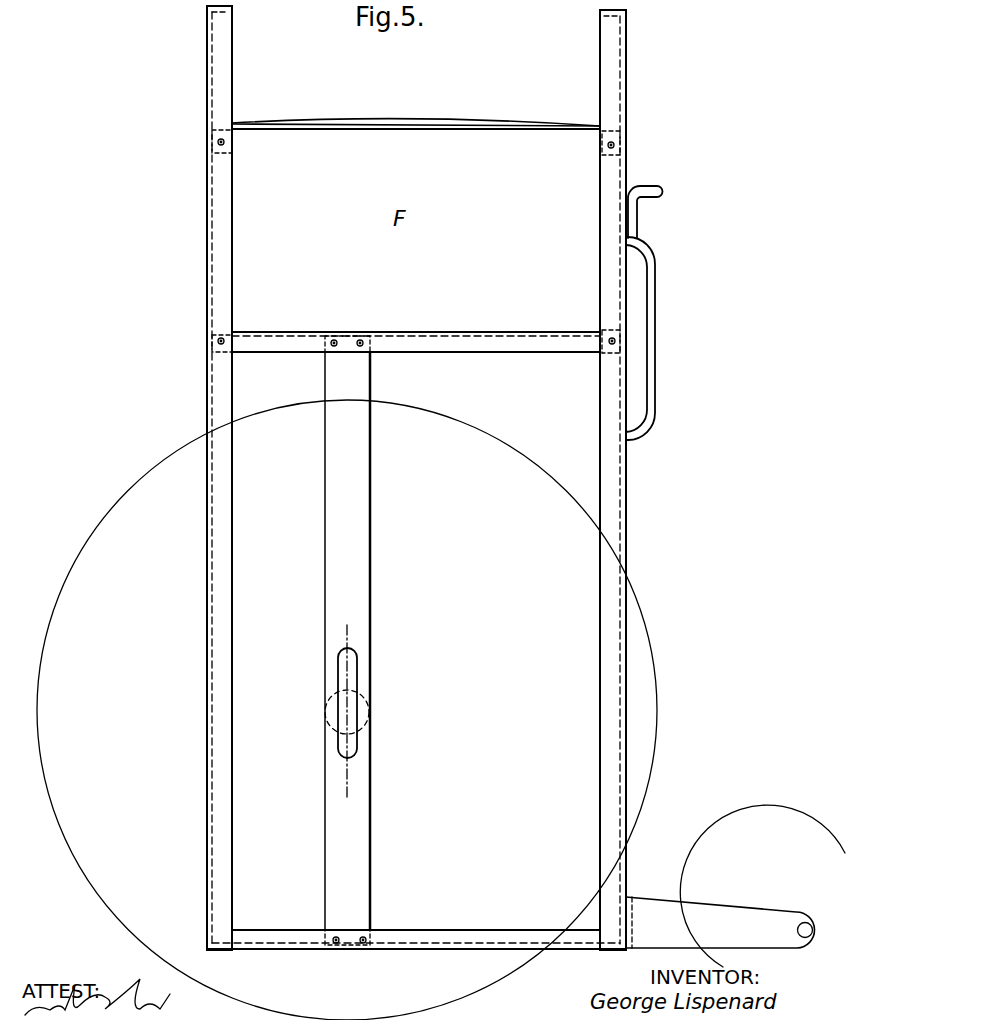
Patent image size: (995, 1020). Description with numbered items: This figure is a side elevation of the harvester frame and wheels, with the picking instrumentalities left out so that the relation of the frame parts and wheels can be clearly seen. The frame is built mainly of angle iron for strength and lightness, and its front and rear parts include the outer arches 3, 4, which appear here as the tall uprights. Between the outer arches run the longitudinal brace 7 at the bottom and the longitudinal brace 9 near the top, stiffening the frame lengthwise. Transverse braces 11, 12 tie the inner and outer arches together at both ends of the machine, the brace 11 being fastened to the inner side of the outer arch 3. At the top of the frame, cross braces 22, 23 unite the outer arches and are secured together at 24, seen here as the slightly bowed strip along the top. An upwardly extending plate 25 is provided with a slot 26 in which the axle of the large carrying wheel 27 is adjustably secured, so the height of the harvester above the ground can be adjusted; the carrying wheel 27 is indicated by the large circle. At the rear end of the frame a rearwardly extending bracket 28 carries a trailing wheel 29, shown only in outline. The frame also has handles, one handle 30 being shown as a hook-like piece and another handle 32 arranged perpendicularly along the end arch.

The outer arch 3 is at (233, 272).
The outer arch 4 is at (626, 82).
The longitudinal brace 7 is at (423, 949).
The longitudinal brace 9 is at (524, 330).
The transverse brace 11 is at (228, 133).
The transverse brace 12 is at (616, 150).
The cross brace 22 is at (289, 118).
The cross brace 23 is at (416, 141).
The securing point of cross braces 24 is at (420, 112).
The upwardly extending plate 25 is at (371, 378).
The slot 26 is at (347, 712).
The carrying wheel 27 is at (347, 710).
The rearwardly extending bracket 28 is at (672, 907).
The trailing wheel 29 is at (772, 858).
The handle 30 is at (655, 188).
The handle 32 is at (656, 338).